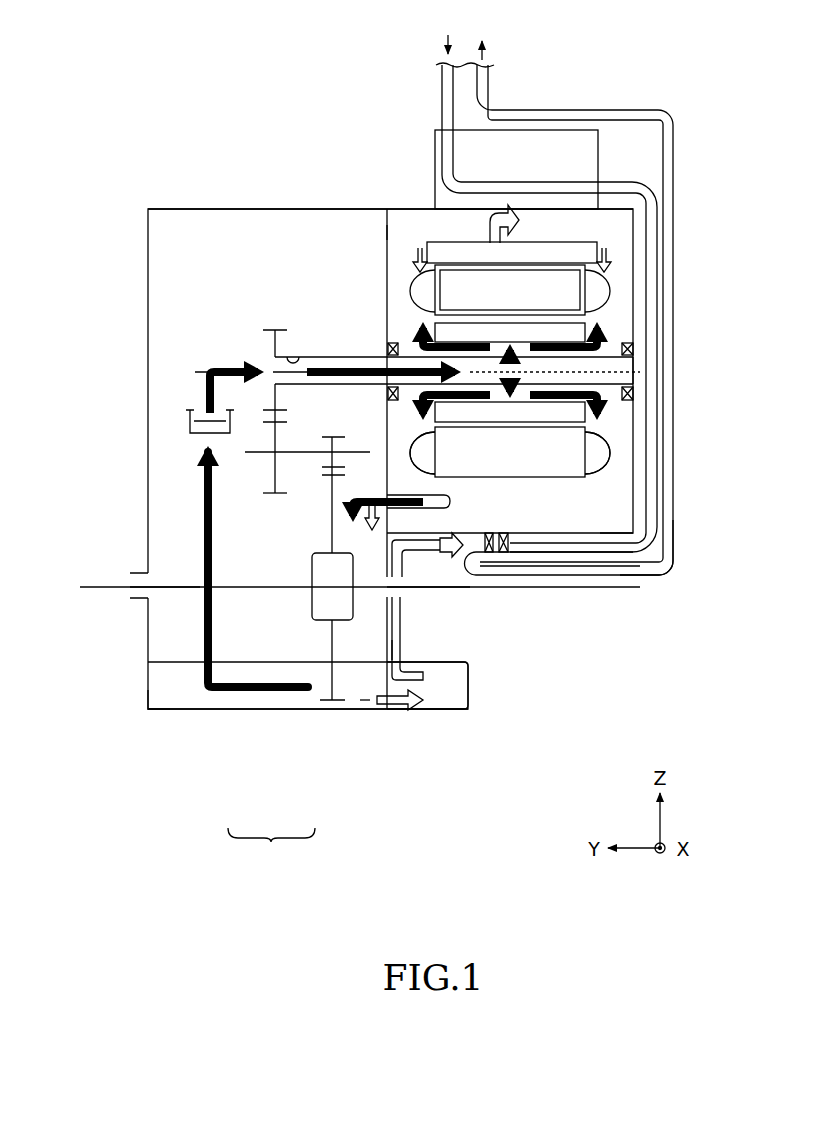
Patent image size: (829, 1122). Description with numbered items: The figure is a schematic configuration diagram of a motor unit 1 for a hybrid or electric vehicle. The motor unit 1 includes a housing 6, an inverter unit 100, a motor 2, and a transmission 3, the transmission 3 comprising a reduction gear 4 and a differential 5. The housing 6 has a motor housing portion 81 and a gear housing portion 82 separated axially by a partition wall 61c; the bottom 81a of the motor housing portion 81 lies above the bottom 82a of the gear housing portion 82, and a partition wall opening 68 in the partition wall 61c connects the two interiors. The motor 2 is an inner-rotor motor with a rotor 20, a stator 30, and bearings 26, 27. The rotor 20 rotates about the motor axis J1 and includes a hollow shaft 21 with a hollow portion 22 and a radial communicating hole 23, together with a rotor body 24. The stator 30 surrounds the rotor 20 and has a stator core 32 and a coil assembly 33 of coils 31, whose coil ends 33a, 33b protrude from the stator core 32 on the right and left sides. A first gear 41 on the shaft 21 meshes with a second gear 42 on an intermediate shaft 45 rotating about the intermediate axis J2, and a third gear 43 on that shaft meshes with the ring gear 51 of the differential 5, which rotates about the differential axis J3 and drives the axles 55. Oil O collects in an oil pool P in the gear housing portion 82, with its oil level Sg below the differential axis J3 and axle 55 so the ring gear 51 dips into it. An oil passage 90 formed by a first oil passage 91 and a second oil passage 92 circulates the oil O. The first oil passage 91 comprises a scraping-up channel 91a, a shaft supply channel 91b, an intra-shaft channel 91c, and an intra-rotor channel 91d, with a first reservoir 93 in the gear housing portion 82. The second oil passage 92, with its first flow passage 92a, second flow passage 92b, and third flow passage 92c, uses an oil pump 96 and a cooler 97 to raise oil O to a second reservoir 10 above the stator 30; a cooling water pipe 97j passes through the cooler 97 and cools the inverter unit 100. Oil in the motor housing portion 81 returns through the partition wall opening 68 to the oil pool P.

The motor unit 1 is at (650, 75).
The motor 2 is at (627, 265).
The transmission 3 is at (193, 252).
The reduction gear 4 is at (268, 506).
The differential 5 is at (303, 609).
The housing 6 is at (645, 200).
The second reservoir 10 is at (602, 230).
The rotor 20 is at (612, 306).
The shaft 21 is at (312, 353).
The hollow portion 22 is at (293, 357).
The communicating hole 23 is at (634, 394).
The rotor body 24 is at (634, 349).
The bearing 26 is at (638, 366).
The bearing 27 is at (388, 340).
The stator 30 is at (624, 278).
The coil 31 is at (570, 298).
The stator core 32 is at (608, 297).
The coil assembly 33 is at (606, 480).
The coil end 33a is at (608, 447).
The coil end 33b is at (414, 470).
The first gear 41 is at (283, 328).
The second gear 42 is at (285, 495).
The third gear 43 is at (318, 478).
The intermediate shaft 45 is at (300, 450).
The ring gear 51 is at (328, 711).
The axle 55 is at (185, 588).
The partition wall 61c is at (380, 231).
The partition wall opening 68 is at (394, 508).
The motor housing portion 81 is at (404, 204).
The bottom 81a is at (645, 550).
The gear housing portion 82 is at (258, 204).
The bottom 82a is at (227, 711).
The oil passage 90 is at (271, 848).
The first oil passage 91 is at (233, 710).
The scraping-up channel 91a is at (202, 498).
The shaft supply channel 91b is at (240, 365).
The intra-shaft channel 91c is at (352, 367).
The intra-rotor channel 91d is at (602, 410).
The second oil passage 92 is at (288, 710).
The first flow passage 92a is at (397, 712).
The second flow passage 92b is at (402, 622).
The third flow passage 92c is at (665, 572).
The first reservoir 93 is at (188, 426).
The oil pump 96 is at (452, 712).
The cooler 97 is at (474, 585).
The cooling water pipe 97j is at (676, 540).
The inverter unit 100 is at (582, 130).
The motor axis J1 is at (645, 375).
The intermediate axis J2 is at (352, 450).
The differential axis J3 is at (517, 590).
The oil O is at (365, 708).
The oil pool P is at (133, 696).
The oil level Sg is at (173, 663).